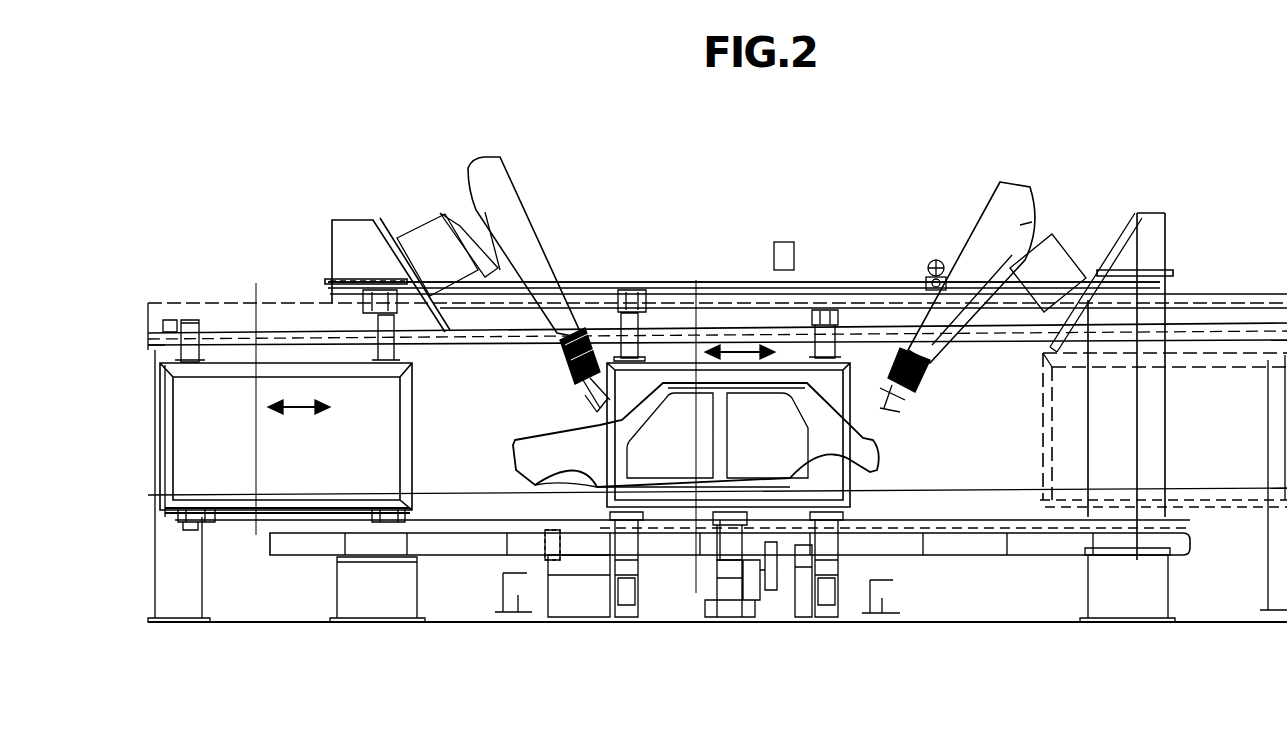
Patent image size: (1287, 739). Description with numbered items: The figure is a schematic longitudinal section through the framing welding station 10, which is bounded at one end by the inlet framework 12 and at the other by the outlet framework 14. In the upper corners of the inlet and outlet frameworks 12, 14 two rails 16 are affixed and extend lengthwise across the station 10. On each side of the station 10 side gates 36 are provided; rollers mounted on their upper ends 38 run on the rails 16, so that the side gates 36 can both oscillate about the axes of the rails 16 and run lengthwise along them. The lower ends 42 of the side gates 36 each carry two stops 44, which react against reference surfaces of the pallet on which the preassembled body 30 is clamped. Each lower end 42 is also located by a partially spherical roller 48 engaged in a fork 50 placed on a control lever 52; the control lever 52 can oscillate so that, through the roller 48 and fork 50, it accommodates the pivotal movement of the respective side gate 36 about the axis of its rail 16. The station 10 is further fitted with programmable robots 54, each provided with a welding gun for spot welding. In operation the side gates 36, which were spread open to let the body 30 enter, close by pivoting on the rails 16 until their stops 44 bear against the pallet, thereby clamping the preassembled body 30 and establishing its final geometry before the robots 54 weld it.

The framing welding station 10 is at (866, 283).
The inlet framework 12 is at (1165, 393).
The outlet framework 14 is at (337, 238).
The rails 16 is at (980, 340).
The preassembled body 30 is at (878, 440).
The side gates 36 is at (412, 418).
The upper ends of the side gates 38 is at (188, 335).
The lower ends of the side gates 42 is at (250, 515).
The stops 44 is at (182, 530).
The partially spherical roller 48 is at (292, 556).
The fork 50 is at (708, 553).
The control lever 52 is at (715, 575).
The programmable robots 54 is at (512, 215).